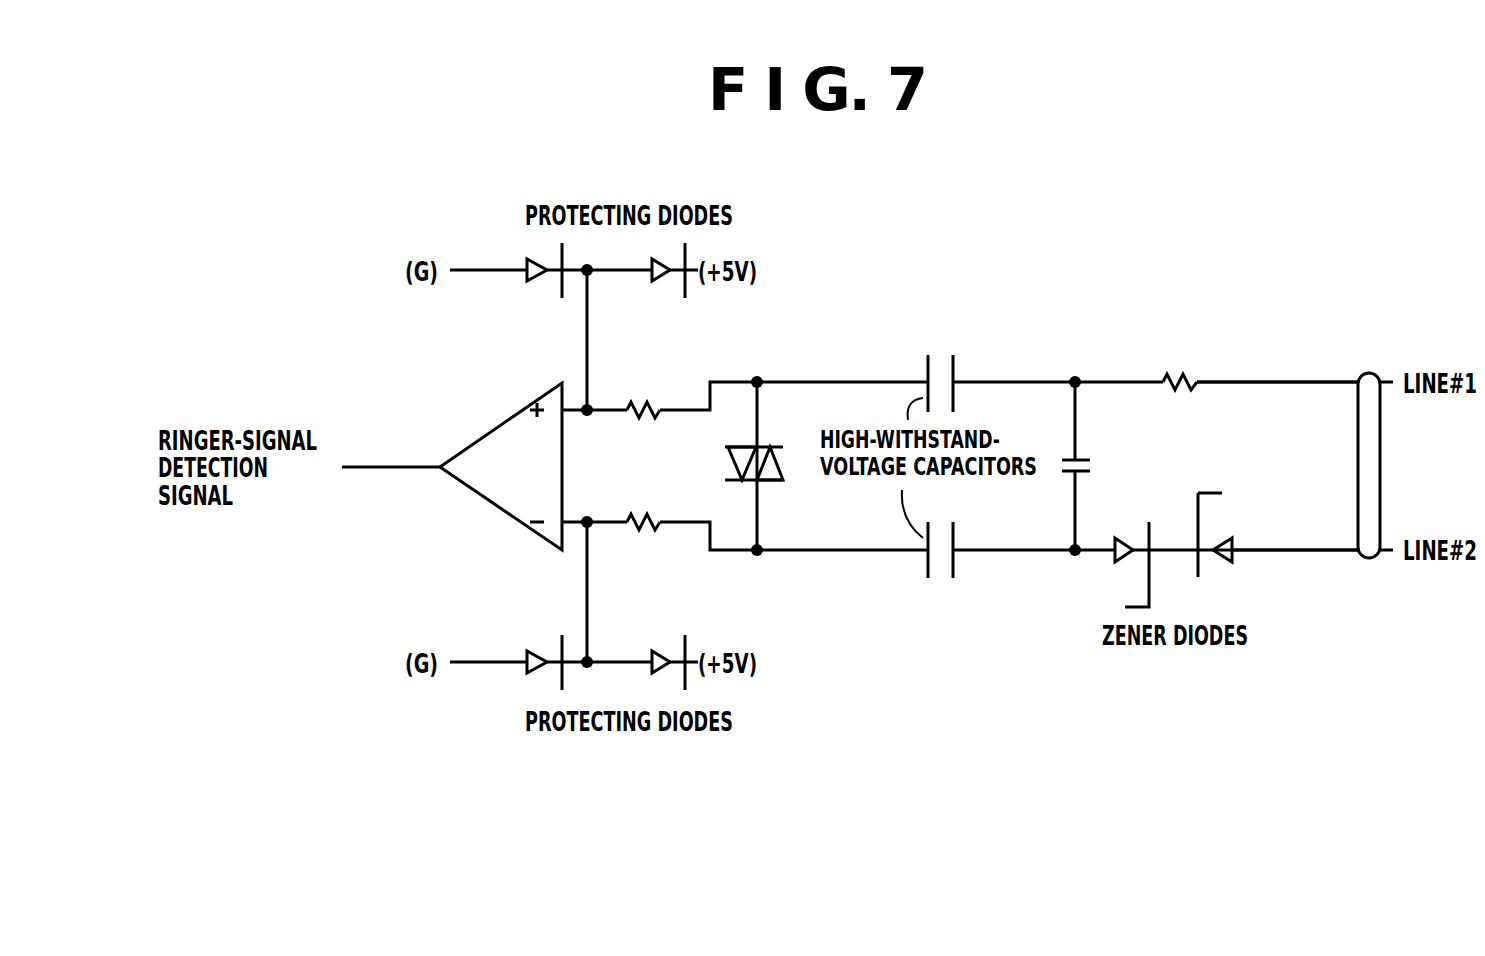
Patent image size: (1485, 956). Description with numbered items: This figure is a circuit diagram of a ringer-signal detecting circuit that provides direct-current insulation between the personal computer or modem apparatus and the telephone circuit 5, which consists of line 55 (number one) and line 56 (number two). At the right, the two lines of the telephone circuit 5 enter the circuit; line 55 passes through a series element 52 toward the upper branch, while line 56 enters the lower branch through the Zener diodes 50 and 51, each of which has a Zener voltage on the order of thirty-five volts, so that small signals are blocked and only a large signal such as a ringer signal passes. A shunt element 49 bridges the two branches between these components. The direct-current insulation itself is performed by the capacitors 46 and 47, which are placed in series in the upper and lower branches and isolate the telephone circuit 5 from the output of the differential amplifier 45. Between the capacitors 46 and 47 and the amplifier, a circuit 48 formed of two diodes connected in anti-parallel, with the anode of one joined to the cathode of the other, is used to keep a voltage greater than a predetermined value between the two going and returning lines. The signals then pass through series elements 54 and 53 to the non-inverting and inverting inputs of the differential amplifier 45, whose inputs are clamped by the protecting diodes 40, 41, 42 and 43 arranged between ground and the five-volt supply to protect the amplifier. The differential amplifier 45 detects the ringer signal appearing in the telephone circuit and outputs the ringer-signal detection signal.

The telephone circuit 5 is at (1370, 560).
The protecting diode 40 is at (538, 277).
The protecting diode 41 is at (662, 277).
The protecting diode 42 is at (540, 645).
The protecting diode 43 is at (663, 645).
The differential amplifier 45 is at (495, 516).
The capacitor 46 is at (958, 375).
The capacitor 47 is at (957, 566).
The circuit 48 is at (788, 458).
The capacitor 49 is at (1081, 456).
The Zener diode 50 is at (1112, 556).
The Zener diode 51 is at (1236, 568).
The resistor 52 is at (1196, 376).
The resistor 53 is at (644, 490).
The resistor 54 is at (644, 378).
The line #1 55 is at (1289, 378).
The line #2 56 is at (1289, 546).